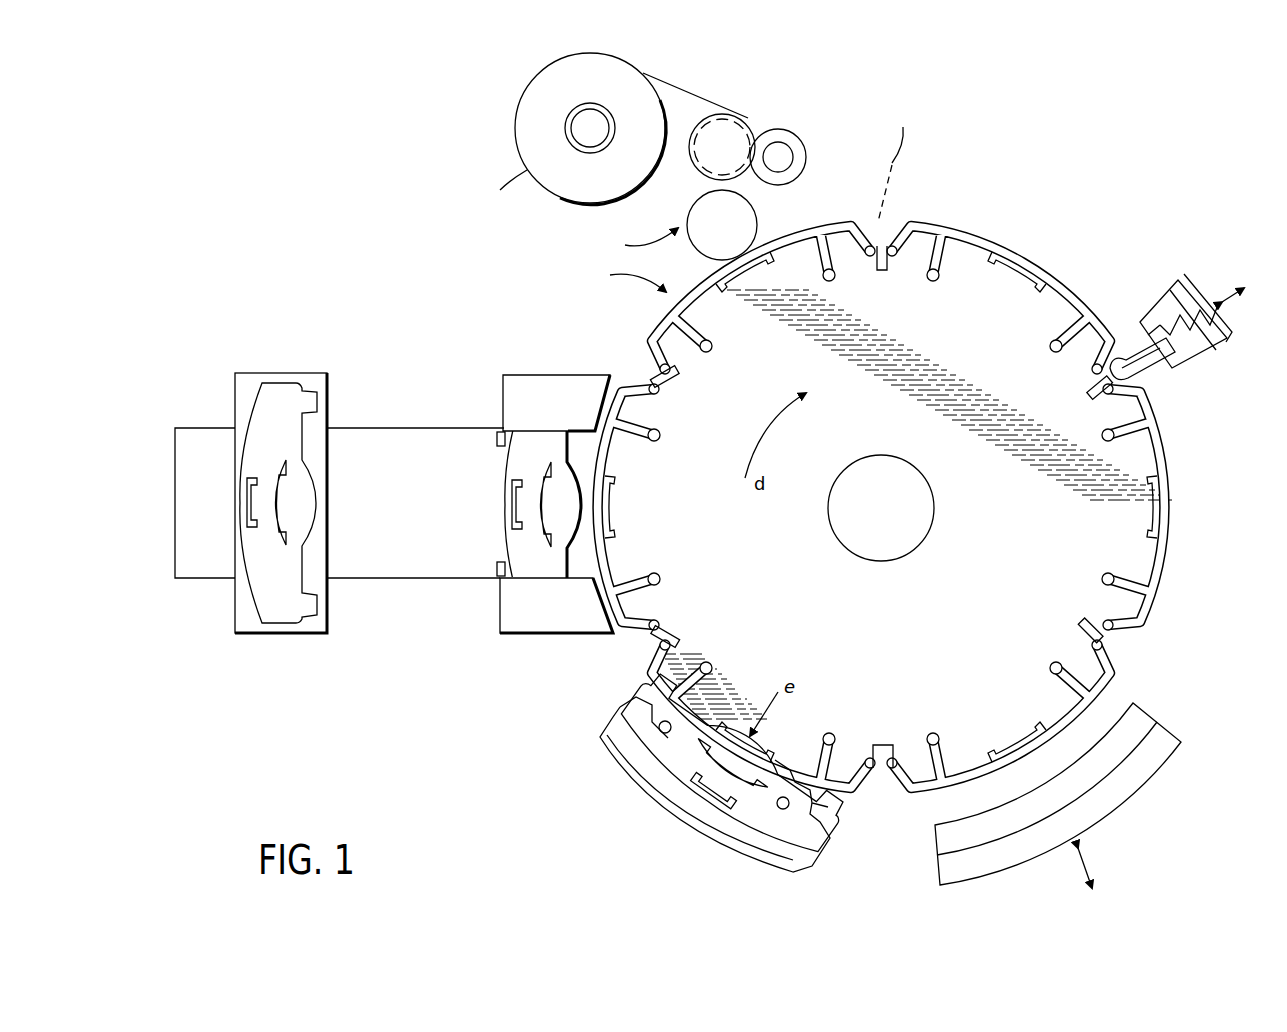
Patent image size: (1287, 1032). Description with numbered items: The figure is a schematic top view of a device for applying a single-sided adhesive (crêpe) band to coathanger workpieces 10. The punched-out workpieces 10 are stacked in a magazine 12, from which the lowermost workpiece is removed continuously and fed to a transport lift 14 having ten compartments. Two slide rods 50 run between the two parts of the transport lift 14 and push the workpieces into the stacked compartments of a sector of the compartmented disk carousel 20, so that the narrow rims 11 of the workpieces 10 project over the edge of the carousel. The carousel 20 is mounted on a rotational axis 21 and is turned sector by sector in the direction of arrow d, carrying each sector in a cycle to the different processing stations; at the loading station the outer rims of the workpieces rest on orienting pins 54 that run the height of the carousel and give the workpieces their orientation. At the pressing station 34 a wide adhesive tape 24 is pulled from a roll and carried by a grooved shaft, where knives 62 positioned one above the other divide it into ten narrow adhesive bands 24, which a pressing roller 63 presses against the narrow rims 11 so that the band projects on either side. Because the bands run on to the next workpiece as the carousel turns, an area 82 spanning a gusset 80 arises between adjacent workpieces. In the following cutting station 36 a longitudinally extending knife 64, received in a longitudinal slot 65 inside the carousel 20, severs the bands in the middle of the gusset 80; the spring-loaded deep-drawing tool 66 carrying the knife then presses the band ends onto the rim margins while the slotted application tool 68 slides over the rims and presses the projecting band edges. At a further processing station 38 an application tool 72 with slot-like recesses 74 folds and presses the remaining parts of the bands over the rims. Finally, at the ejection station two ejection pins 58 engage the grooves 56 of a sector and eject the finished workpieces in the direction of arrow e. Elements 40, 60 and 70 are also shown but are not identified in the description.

The workpiece 10 is at (520, 460).
The narrow rim 11 is at (638, 283).
The magazine 12 is at (236, 650).
The transport lift 14 is at (531, 655).
The compartmented disk carousel 20 is at (881, 457).
The rotational axis 21 is at (896, 518).
The adhesive tape 24 is at (680, 84).
The pressing station 34 is at (636, 240).
The cutting station 36 is at (1195, 324).
The processing station 38 is at (1072, 771).
The unloading tray 40 is at (678, 826).
The slide rod 50 is at (497, 436).
The orienting pin 54 is at (658, 372).
The groove 56 is at (630, 437).
The ejection pin 58 is at (660, 438).
The guide roller 60 is at (700, 175).
The knife 62 is at (800, 160).
The pressing roller 63 is at (760, 216).
The knife 64 is at (1103, 362).
The longitudinal slot 65 is at (1088, 396).
The deep-drawing tool 66 is at (1135, 365).
The application tool 68 is at (1160, 298).
The plate 70 is at (1232, 322).
The application tool 72 is at (1136, 768).
The slot-like recess 74 is at (522, 170).
The gusset 80 is at (890, 228).
The area 82 is at (897, 161).